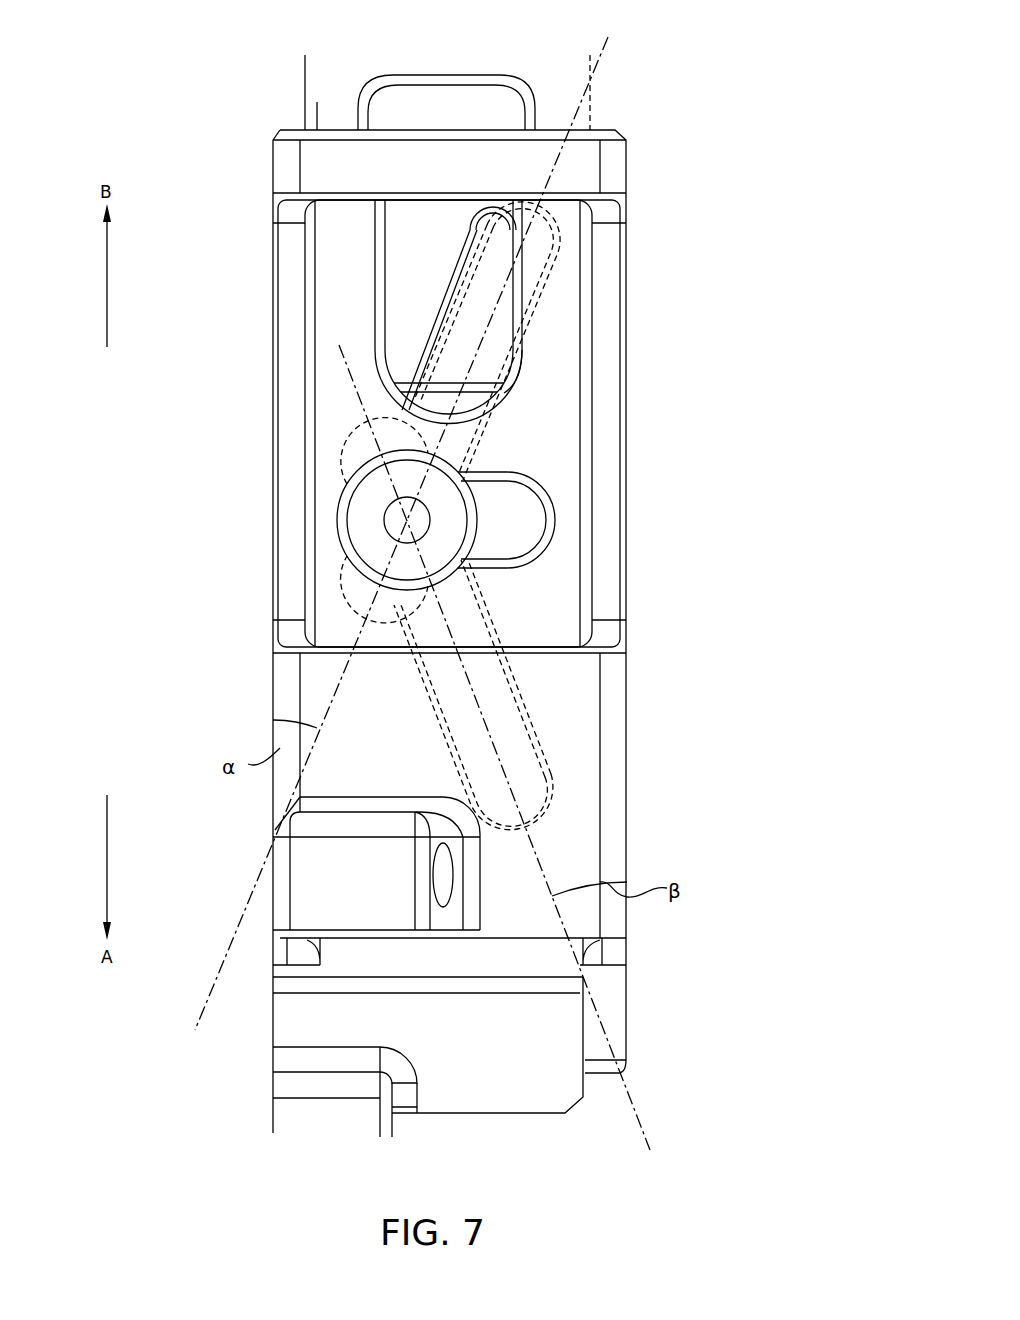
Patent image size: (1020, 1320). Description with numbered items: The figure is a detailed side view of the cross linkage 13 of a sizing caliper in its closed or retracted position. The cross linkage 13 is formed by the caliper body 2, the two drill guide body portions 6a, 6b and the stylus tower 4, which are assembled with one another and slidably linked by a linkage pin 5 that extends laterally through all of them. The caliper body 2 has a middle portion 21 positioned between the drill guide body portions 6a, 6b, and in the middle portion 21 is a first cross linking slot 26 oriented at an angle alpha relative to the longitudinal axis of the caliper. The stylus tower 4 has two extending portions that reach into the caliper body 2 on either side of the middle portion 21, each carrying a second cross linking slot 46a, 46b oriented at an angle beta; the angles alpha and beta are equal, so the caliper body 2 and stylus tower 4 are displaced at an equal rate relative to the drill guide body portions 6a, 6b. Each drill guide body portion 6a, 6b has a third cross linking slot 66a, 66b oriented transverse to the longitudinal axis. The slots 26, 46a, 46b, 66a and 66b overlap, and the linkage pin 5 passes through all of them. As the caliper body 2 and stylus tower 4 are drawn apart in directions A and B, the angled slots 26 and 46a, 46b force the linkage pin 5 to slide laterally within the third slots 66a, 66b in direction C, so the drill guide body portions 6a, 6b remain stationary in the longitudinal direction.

The caliper body 2 is at (640, 334).
The stylus tower 4 is at (333, 90).
The linkage pin 5 is at (337, 520).
The drill guide body portion 6a is at (494, 423).
The drill guide body portion 6b is at (548, 397).
The cross linkage 13 is at (506, 505).
The middle portion 21 is at (408, 288).
The first cross linking slot 26 is at (552, 289).
The second cross linking slot 46a is at (539, 516).
The second cross linking slot 46b is at (522, 706).
The third cross linking slot 66a is at (589, 499).
The third cross linking slot 66b is at (569, 520).